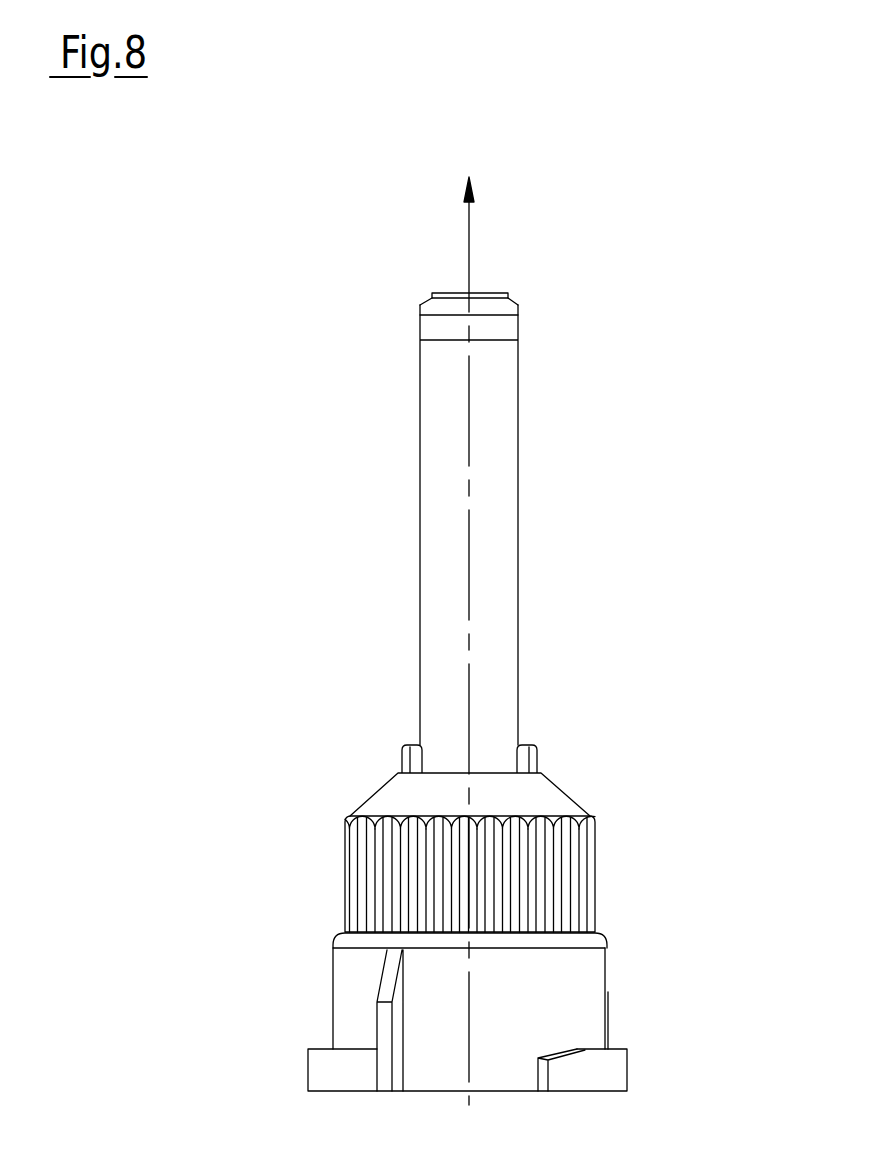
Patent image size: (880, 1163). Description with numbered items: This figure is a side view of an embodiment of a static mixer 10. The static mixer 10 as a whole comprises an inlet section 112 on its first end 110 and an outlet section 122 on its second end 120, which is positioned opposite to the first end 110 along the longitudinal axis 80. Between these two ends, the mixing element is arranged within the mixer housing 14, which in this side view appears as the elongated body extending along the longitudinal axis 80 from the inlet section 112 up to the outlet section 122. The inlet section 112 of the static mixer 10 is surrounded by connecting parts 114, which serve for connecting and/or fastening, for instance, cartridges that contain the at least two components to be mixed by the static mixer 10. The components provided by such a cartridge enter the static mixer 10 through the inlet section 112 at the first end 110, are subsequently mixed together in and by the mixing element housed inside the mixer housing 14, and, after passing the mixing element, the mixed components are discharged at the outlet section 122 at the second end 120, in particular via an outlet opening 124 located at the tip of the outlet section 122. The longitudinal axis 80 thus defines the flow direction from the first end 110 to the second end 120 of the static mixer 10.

The static mixer 10 is at (725, 76).
The longitudinal axis 80 is at (468, 234).
The second end 120 is at (237, 256).
The mixer housing 14 is at (505, 492).
The outlet opening 124 is at (503, 278).
The outlet section 122 is at (510, 310).
The first end 110 is at (183, 970).
The inlet section 112 is at (565, 972).
The connecting parts 114 is at (317, 1065).